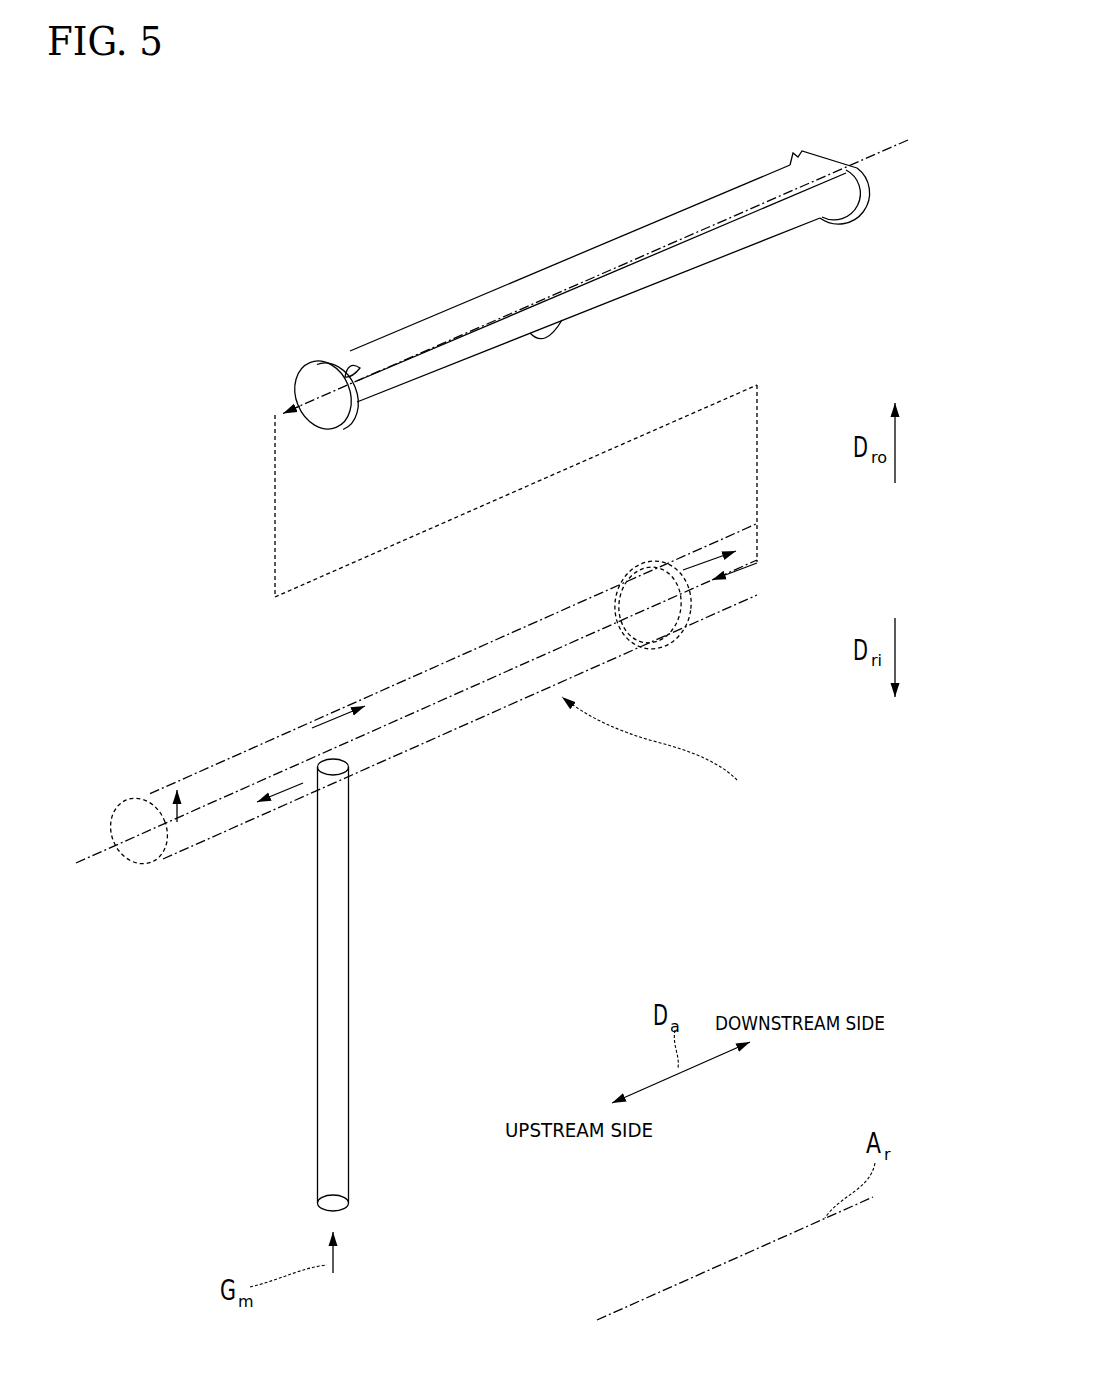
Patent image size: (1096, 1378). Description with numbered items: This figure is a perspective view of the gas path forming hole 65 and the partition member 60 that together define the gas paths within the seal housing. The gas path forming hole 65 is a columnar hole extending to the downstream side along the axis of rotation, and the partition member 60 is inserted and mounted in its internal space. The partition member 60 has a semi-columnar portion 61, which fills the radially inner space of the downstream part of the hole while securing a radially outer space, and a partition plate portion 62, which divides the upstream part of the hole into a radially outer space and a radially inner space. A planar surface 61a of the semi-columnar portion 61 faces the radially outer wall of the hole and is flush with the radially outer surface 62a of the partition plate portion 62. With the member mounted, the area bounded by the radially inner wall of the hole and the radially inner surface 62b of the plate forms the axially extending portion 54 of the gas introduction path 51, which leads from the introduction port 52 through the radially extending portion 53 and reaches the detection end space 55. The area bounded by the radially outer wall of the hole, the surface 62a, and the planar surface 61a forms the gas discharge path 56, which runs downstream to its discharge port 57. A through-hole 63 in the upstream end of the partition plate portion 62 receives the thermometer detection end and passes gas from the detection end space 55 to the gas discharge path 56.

The gas introduction path 51 is at (293, 1024).
The introduction port 52 is at (343, 1213).
The radially extending portion 53 is at (317, 992).
The axially extending portion 54 is at (232, 822).
The detection end space 55 is at (150, 790).
The gas discharge path 56 is at (406, 667).
The discharge port 57 is at (672, 562).
The partition member 60 is at (534, 292).
The semi-columnar portion 61 is at (610, 233).
The planar surface 61a is at (668, 215).
The partition plate portion 62 is at (601, 321).
The radially outer surface 62a is at (425, 330).
The radially inner surface 62b is at (415, 385).
The through-hole 63 is at (348, 370).
The gas path forming hole 65 is at (666, 748).